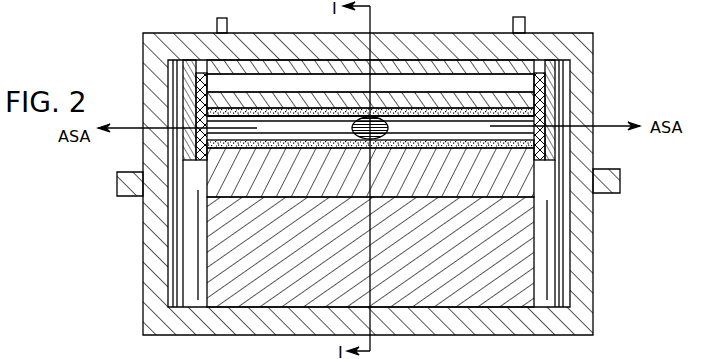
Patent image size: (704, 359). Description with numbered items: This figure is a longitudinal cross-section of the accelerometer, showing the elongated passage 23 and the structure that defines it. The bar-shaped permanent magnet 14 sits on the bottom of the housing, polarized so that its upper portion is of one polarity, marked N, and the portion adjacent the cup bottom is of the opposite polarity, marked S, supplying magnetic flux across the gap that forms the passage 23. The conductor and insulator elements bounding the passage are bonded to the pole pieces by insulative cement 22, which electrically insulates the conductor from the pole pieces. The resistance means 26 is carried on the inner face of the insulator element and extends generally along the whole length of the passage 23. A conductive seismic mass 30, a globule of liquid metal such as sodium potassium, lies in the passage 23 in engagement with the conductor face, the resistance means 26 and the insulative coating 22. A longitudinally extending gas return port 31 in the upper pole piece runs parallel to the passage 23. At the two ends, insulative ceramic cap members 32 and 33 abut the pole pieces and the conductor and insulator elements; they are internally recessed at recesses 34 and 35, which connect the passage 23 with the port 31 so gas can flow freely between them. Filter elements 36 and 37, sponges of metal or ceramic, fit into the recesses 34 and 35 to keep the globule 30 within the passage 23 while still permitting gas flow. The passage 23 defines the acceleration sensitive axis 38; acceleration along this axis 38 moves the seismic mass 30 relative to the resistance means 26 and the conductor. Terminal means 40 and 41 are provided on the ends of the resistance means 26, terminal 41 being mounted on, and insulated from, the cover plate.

The permanent magnet 14 is at (443, 257).
The insulative cement 22 is at (458, 145).
The passage 23 is at (442, 137).
The resistance means 26 is at (262, 130).
The conductive seismic mass means 30 is at (378, 145).
The gas return port 31 is at (421, 83).
The cap member 32 is at (550, 60).
The cap member 33 is at (197, 62).
The recess 34 is at (548, 90).
The recess 35 is at (143, 93).
The filter element 36 is at (540, 160).
The filter element 37 is at (201, 162).
The acceleration sensitive axis 38 is at (133, 130).
The terminal means 40 is at (228, 21).
The terminal means 41 is at (526, 22).